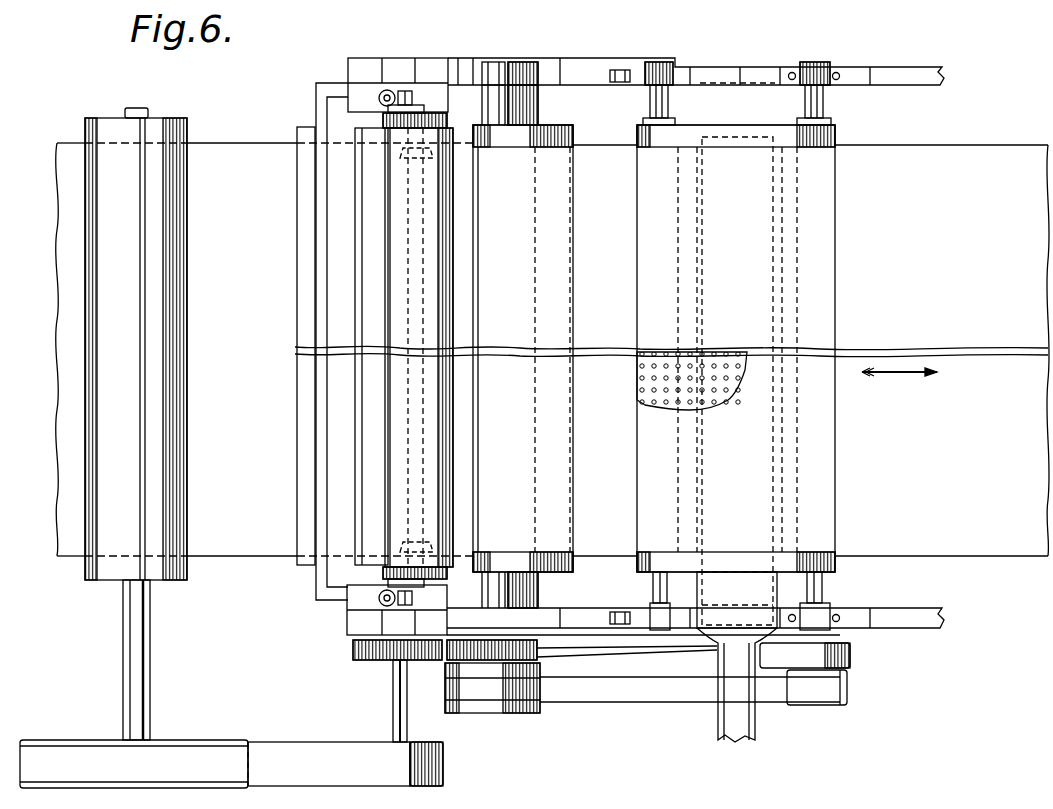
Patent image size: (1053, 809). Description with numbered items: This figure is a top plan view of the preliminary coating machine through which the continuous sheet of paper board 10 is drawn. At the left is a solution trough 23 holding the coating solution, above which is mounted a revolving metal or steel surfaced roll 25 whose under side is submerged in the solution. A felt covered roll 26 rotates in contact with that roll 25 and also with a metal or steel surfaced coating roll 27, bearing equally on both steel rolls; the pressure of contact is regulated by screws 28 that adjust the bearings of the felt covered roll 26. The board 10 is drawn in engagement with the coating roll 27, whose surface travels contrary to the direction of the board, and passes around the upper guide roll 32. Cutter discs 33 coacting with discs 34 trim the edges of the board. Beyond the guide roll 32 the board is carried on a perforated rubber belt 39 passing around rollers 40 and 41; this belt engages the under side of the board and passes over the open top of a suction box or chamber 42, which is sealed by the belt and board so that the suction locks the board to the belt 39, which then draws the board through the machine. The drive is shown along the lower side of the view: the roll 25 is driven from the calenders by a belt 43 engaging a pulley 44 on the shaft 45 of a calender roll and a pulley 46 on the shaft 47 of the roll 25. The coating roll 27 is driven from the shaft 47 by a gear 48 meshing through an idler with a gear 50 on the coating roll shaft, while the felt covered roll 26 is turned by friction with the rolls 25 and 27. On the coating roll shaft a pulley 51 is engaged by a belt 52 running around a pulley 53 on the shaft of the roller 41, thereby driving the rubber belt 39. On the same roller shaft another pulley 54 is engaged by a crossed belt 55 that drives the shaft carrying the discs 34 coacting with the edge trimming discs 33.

The continuous sheet of paper board 10 is at (246, 542).
The solution trough 23 is at (318, 588).
The revolving metal or steel surfaced roll 25 is at (360, 430).
The felt covered roll 26 is at (388, 483).
The metal or steel surfaced coating roll 27 is at (461, 125).
The screws 28 is at (380, 96).
The guide roll 32 is at (573, 127).
The cutter discs 33 is at (455, 547).
The discs 34 is at (418, 153).
The perforated rubber belt 39 is at (650, 385).
The roller 40 is at (652, 578).
The roller 41 is at (828, 578).
The suction box or chamber 42 is at (737, 439).
The belt 43 is at (272, 746).
The pulley 44 is at (72, 742).
The shaft 45 is at (127, 606).
The pulley 46 is at (440, 743).
The shaft 47 is at (393, 708).
The gear 48 is at (353, 650).
The gear 50 is at (540, 655).
The pulley 51 is at (518, 713).
The belt 52 is at (678, 700).
The pulley 53 is at (826, 706).
The pulley 54 is at (842, 645).
The crossed belt 55 is at (645, 656).